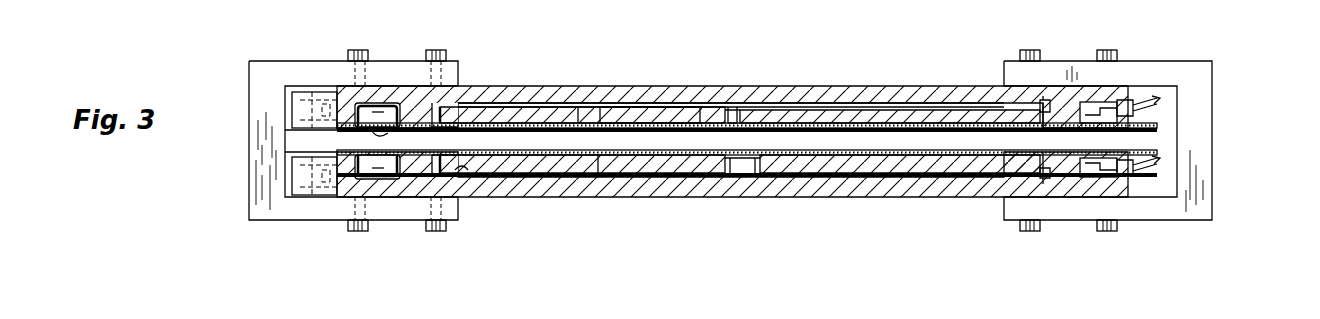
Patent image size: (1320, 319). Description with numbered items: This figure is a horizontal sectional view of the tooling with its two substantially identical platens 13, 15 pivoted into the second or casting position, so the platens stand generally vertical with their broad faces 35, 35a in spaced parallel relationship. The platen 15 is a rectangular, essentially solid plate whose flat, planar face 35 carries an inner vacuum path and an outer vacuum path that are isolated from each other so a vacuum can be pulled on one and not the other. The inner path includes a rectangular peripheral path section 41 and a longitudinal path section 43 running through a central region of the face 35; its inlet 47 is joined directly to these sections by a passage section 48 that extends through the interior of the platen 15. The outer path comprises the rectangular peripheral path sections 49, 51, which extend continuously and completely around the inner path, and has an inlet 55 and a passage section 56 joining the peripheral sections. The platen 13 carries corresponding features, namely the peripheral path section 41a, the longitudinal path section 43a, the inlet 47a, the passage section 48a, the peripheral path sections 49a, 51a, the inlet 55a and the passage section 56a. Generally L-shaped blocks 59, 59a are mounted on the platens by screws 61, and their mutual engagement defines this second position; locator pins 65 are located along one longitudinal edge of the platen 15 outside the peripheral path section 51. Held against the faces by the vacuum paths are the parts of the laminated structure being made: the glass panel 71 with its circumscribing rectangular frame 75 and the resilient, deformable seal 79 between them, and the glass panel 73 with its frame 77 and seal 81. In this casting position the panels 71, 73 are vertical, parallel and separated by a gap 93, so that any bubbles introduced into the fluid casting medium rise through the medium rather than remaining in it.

The platen 13 is at (884, 84).
The platen 15 is at (814, 199).
The broad face 35 is at (645, 150).
The broad face 35a is at (727, 117).
The peripheral path section 41 is at (437, 168).
The peripheral path section 41a is at (460, 128).
The longitudinal path section 43 is at (750, 160).
The longitudinal path section 43a is at (738, 121).
The inlet 47 is at (1042, 180).
The inlet 47a is at (1046, 102).
The passage section 48 is at (877, 177).
The passage section 48a is at (648, 122).
The peripheral path section 49 is at (413, 158).
The peripheral path section 49a is at (441, 105).
The peripheral path section 51 is at (340, 178).
The peripheral path section 51a is at (336, 128).
The inlet 55 is at (1102, 178).
The inlet 55a is at (1099, 105).
The passage section 56 is at (381, 165).
The passage section 56a is at (380, 104).
The L-shaped block 59 is at (248, 187).
The L-shaped block 59a is at (263, 77).
The screw 61 is at (1022, 231).
The locator pin 65 is at (318, 150).
The glass panel 71 is at (548, 135).
The glass panel 73 is at (580, 148).
The rectangular frame 75 is at (384, 130).
The rectangular frame 77 is at (395, 166).
The seal 79 is at (386, 136).
The seal 81 is at (463, 166).
The gap 93 is at (867, 140).